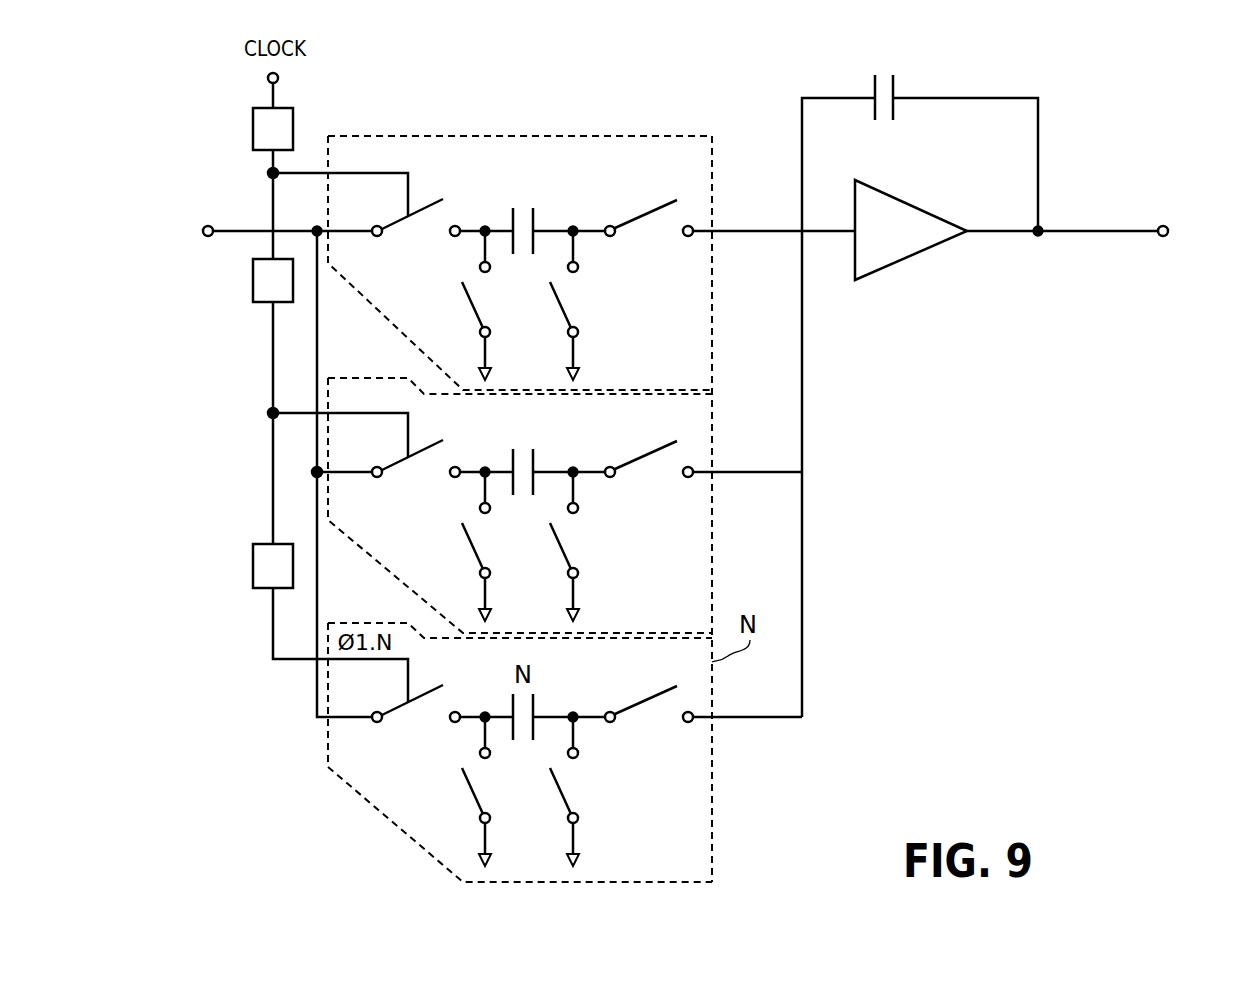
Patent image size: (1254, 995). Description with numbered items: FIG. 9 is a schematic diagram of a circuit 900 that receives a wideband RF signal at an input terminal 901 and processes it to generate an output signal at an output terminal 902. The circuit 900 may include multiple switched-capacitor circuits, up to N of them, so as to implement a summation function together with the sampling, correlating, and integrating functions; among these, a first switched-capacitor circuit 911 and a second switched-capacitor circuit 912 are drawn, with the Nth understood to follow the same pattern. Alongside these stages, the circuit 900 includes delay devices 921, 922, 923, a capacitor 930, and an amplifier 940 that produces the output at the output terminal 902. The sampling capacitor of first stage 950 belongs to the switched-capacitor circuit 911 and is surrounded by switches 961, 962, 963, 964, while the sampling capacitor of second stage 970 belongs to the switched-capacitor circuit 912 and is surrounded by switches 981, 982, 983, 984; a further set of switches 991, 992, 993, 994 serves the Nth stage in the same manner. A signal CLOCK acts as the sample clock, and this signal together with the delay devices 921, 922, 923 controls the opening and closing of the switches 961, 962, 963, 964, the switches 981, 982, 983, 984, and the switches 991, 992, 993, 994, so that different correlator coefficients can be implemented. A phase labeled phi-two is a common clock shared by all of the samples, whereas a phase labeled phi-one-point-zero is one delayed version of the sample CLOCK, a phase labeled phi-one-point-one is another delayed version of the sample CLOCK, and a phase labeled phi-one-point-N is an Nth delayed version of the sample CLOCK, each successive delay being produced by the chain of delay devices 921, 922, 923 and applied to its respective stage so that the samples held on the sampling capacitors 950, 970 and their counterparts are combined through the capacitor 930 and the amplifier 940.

The circuit 900 is at (964, 475).
The input terminal 901 is at (203, 231).
The output terminal 902 is at (1168, 227).
The switched-capacitor circuit 911 is at (700, 135).
The switched-capacitor circuit 912 is at (712, 420).
The delay device 921 is at (253, 128).
The delay device 922 is at (253, 282).
The delay device 923 is at (253, 566).
The capacitor 930 is at (884, 76).
The amplifier 940 is at (920, 250).
The sampling capacitor of first stage 950 is at (522, 204).
The switch 961 is at (429, 206).
The switch 962 is at (563, 307).
The switch 963 is at (473, 306).
The switch 964 is at (617, 221).
The sampling capacitor of second stage 970 is at (520, 446).
The switch 981 is at (429, 447).
The switch 982 is at (563, 548).
The switch 983 is at (473, 547).
The switch 984 is at (617, 462).
The switch 991 is at (429, 693).
The switch 992 is at (563, 795).
The switch 993 is at (473, 795).
The switch 994 is at (617, 708).